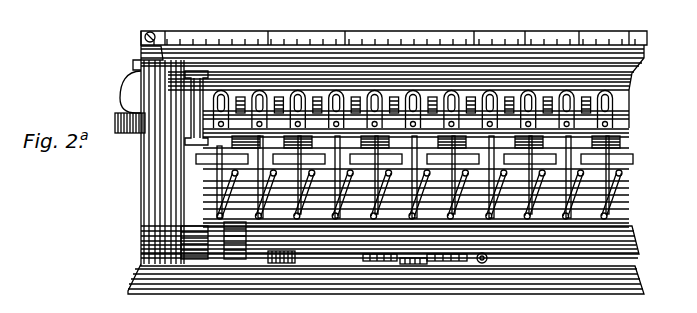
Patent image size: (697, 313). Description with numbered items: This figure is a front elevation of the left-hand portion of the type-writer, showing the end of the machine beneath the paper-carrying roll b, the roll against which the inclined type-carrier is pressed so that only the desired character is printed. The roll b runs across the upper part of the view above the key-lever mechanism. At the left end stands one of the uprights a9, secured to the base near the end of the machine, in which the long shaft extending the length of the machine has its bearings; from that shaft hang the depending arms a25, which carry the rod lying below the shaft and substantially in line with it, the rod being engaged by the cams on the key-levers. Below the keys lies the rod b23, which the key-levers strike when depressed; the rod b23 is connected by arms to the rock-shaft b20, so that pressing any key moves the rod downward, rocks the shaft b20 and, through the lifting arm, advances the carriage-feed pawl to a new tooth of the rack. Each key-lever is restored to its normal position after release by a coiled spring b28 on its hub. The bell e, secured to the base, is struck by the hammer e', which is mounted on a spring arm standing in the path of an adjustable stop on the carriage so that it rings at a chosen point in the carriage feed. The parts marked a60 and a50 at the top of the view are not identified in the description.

The graduated scale bar a60 is at (203, 26).
The scale graduations a50 is at (398, 24).
The paper-carrying roll b is at (344, 52).
The upright a9 is at (134, 205).
The depending arm a25 is at (183, 111).
The coiled spring b28 is at (282, 226).
The rod b23 is at (314, 225).
The rock-shaft b20 is at (335, 243).
The bell e is at (412, 283).
The hammer e' is at (475, 283).